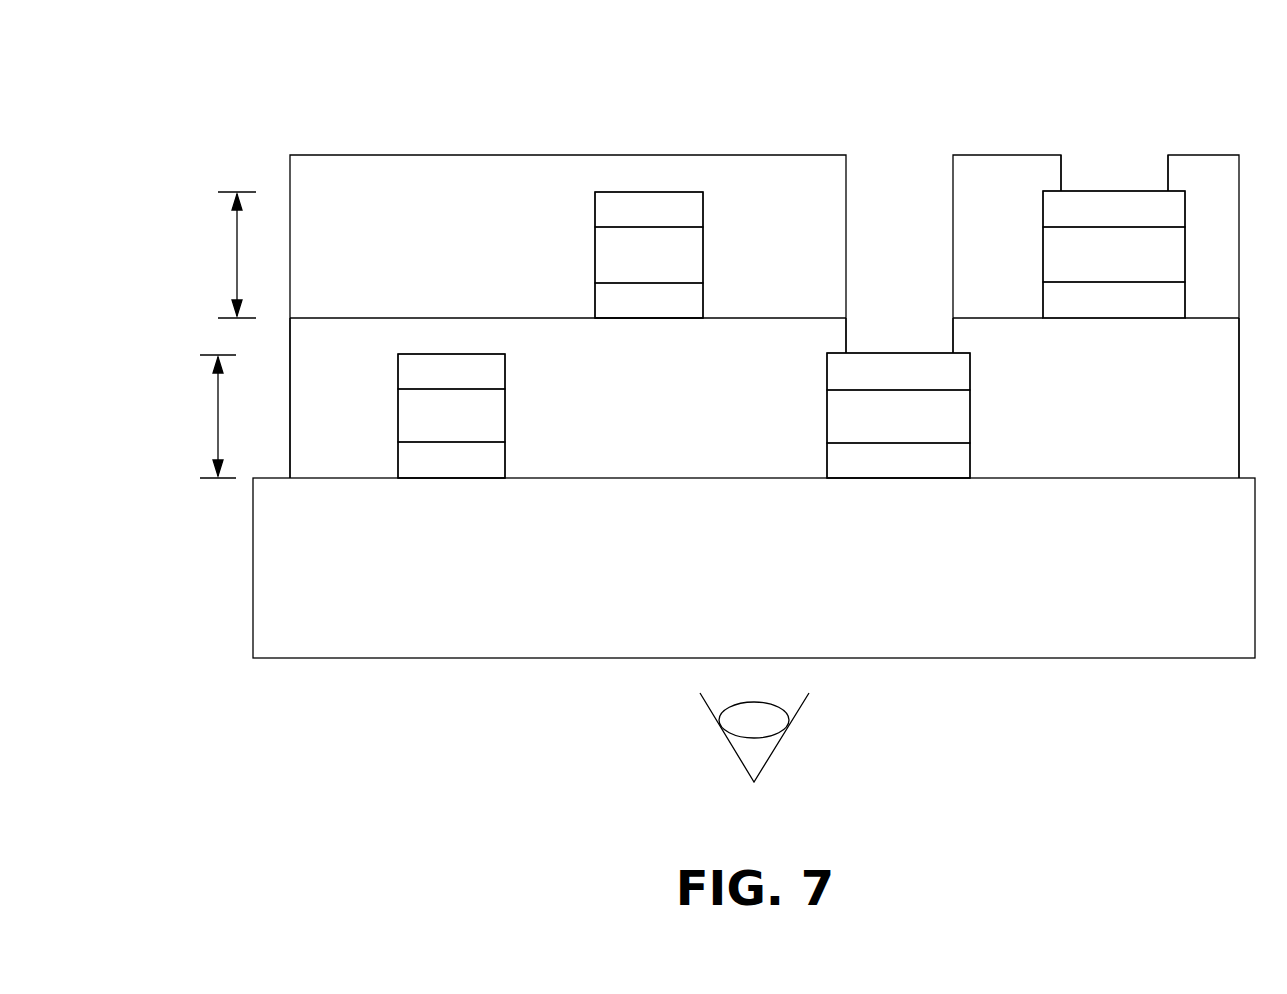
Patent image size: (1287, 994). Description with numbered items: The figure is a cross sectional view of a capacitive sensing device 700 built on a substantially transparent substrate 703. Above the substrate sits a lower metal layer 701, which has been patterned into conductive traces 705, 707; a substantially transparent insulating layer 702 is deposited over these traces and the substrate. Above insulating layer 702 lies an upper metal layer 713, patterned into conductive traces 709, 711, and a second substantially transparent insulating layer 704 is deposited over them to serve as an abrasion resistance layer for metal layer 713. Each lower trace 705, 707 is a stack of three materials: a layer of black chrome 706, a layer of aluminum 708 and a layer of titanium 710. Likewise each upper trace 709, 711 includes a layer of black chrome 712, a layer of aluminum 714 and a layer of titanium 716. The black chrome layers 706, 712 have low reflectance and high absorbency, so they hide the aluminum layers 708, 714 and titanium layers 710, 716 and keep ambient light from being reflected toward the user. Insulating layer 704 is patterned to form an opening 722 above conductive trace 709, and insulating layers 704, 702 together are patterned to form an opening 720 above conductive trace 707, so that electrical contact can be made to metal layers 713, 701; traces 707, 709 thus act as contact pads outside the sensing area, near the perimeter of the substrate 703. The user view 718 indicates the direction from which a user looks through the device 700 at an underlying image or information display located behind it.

The capacitive sensing device 700 is at (731, 42).
The metal layer 701 is at (203, 416).
The substantially transparent insulating material layer 702 is at (647, 456).
The substantially transparent substrate 703 is at (735, 592).
The second substantially transparent insulating material layer 704 is at (413, 291).
The conductive trace 705 is at (398, 389).
The layer of black chrome 706 is at (432, 471).
The conductive trace 707 is at (970, 390).
The layer of aluminum 708 is at (432, 426).
The conductive trace 709 is at (1043, 227).
The layer of titanium 710 is at (432, 383).
The conductive trace 711 is at (703, 227).
The layer of black chrome 712 is at (629, 311).
The metal layer 713 is at (222, 255).
The layer of aluminum 714 is at (629, 266).
The layer of titanium 716 is at (629, 221).
The user view 718 is at (790, 722).
The opening 720 is at (878, 159).
The opening 722 is at (1093, 159).